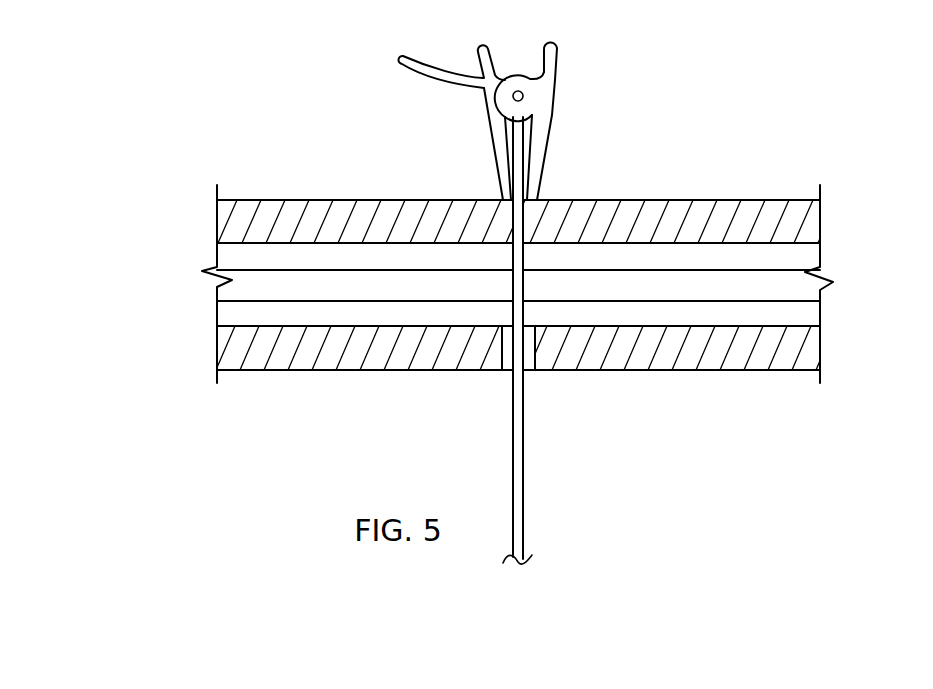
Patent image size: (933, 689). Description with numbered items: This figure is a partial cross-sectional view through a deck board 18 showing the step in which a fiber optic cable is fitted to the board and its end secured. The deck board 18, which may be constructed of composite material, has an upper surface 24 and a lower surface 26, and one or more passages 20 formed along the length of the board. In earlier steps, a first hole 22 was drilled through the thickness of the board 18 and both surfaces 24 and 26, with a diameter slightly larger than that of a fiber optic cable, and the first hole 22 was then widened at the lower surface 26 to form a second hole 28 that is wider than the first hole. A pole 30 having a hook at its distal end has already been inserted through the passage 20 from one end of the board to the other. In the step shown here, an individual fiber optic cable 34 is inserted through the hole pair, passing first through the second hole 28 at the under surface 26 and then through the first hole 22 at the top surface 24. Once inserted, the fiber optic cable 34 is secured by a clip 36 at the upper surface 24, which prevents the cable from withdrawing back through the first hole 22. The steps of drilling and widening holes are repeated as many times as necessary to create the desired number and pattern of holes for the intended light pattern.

The deck board 18 is at (746, 210).
The passage 20 is at (755, 318).
The first hole 22 is at (527, 203).
The upper surface 24 is at (279, 200).
The lower surface 26 is at (262, 372).
The second hole 28 is at (508, 362).
The pole 30 is at (827, 280).
The fiber optic cable 34 is at (523, 471).
The clip 36 is at (547, 82).